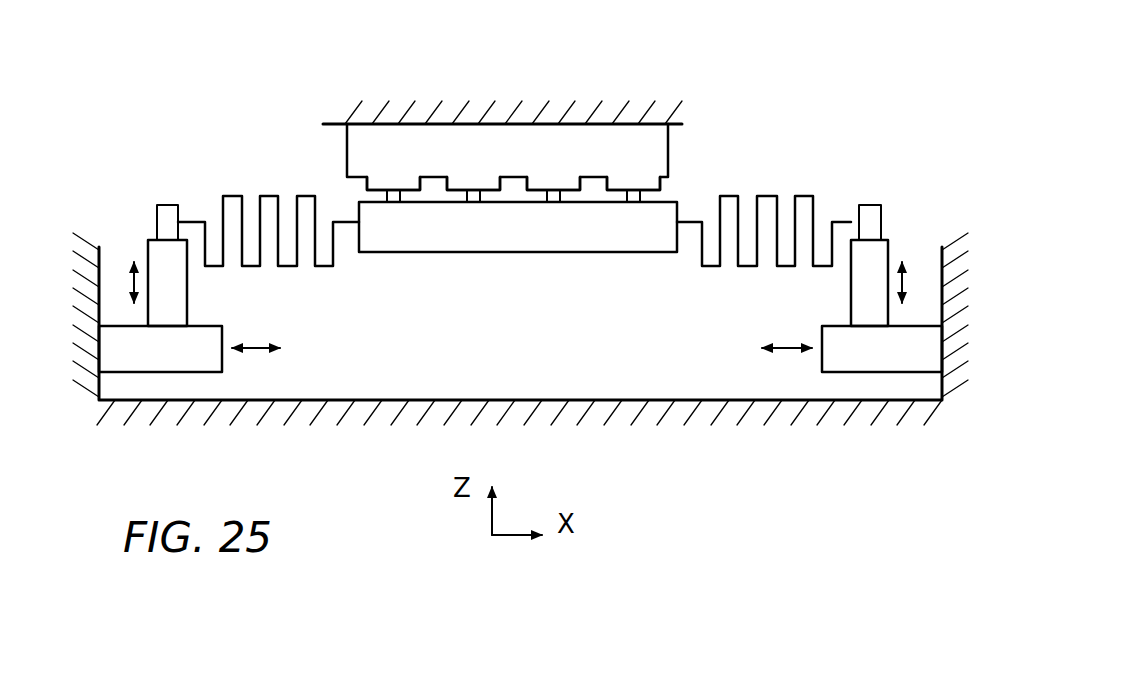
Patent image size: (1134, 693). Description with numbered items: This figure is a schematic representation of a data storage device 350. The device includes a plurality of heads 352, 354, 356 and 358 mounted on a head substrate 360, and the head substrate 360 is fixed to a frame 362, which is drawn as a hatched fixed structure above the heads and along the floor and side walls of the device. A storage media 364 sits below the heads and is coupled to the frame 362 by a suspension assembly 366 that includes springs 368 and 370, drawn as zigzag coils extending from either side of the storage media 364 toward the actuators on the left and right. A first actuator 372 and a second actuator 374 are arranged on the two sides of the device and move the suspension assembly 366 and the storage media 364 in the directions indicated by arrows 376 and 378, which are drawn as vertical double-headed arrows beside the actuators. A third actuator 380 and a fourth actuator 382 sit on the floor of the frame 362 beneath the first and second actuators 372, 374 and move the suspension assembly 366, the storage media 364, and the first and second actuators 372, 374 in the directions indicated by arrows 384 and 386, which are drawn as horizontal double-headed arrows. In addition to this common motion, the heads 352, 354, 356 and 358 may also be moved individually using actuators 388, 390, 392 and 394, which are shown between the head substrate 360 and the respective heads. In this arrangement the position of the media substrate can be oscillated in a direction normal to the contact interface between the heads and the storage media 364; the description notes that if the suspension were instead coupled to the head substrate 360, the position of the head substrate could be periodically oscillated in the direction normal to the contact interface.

The data storage device 350 is at (882, 138).
The head 352 is at (392, 196).
The head 354 is at (474, 196).
The head 356 is at (555, 196).
The head 358 is at (635, 196).
The head substrate 360 is at (522, 140).
The frame 362 is at (427, 118).
The storage media 364 is at (517, 237).
The suspension assembly 366 is at (273, 132).
The spring 368 is at (267, 193).
The spring 370 is at (768, 194).
The first actuator 372 is at (177, 298).
The second actuator 374 is at (860, 300).
The arrow 376 is at (118, 280).
The arrow 378 is at (907, 283).
The third actuator 380 is at (157, 362).
The fourth actuator 382 is at (891, 362).
The arrow 384 is at (257, 350).
The arrow 386 is at (788, 350).
The actuator 388 is at (392, 185).
The actuator 390 is at (470, 185).
The actuator 392 is at (549, 185).
The actuator 394 is at (632, 185).